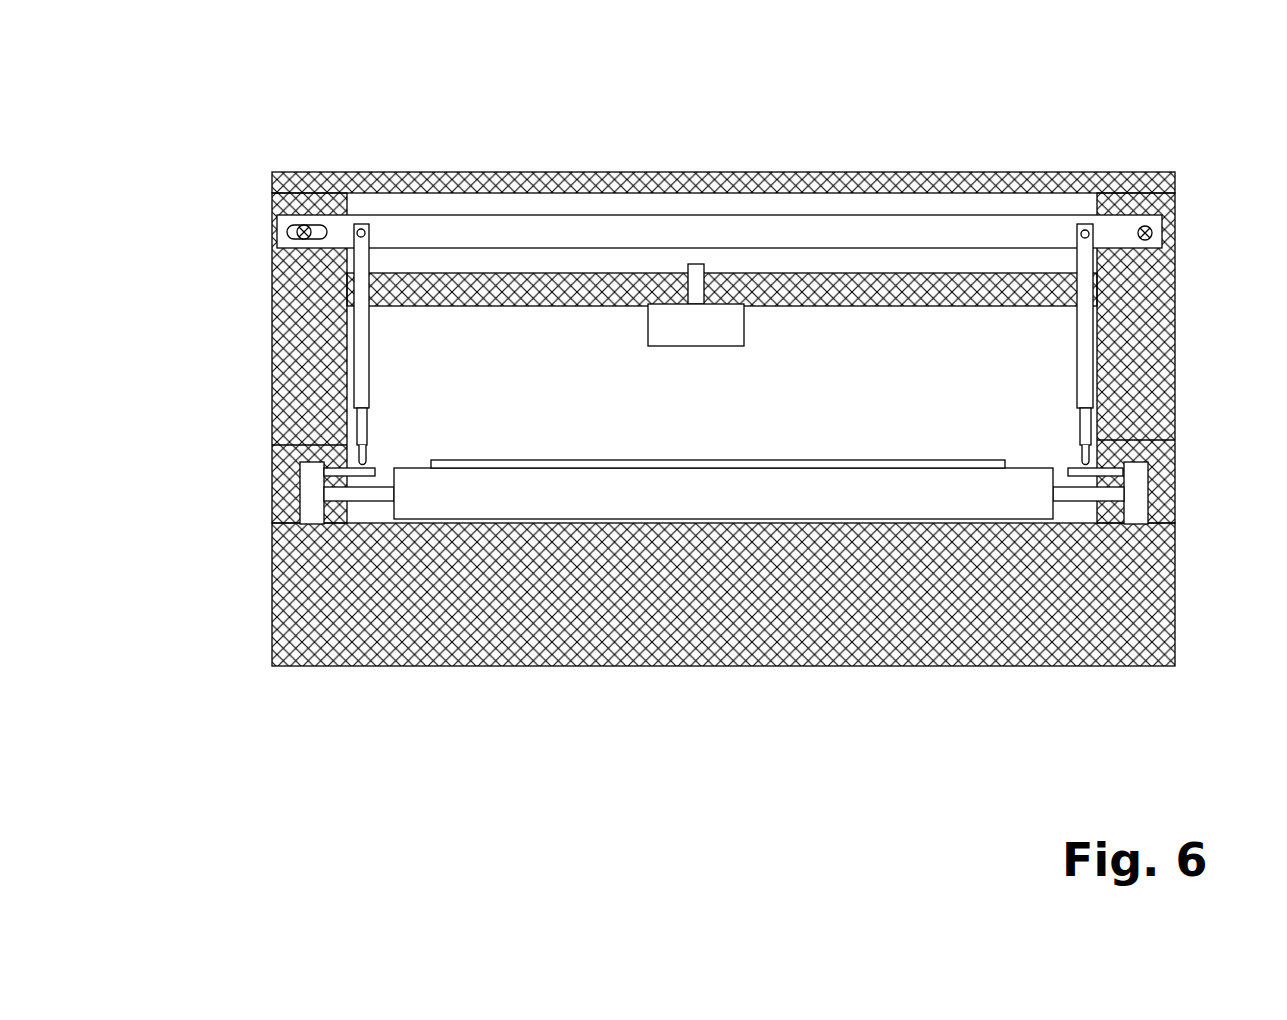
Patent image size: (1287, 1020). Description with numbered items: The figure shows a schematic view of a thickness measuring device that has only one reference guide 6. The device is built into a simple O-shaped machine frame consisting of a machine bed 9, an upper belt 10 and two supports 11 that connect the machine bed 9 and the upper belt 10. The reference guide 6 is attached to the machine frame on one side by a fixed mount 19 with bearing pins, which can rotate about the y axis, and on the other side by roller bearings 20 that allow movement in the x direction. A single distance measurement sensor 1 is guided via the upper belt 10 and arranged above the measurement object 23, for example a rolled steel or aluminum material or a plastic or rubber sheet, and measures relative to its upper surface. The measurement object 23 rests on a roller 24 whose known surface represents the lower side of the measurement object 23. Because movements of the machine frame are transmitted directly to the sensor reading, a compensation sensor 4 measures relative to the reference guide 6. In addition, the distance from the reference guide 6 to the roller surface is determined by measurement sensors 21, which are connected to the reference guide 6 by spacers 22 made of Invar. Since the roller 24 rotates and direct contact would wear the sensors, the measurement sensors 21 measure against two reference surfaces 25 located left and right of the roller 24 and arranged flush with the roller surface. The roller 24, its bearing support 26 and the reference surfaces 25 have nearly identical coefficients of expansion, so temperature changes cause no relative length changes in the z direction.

The distance measurement sensor 1 is at (672, 318).
The compensation sensor 4 is at (696, 263).
The reference guide 6 is at (1053, 214).
The machine bed 9 is at (1048, 617).
The upper belt 10 is at (866, 283).
The support 11 is at (292, 377).
The fixed mount 19 is at (1152, 225).
The roller bearing 20 is at (287, 223).
The measurement sensor 21 is at (352, 443).
The spacer 22 is at (355, 309).
The measurement object 23 is at (525, 465).
The roller 24 is at (633, 497).
The reference surface 25 is at (333, 479).
The bearing support 26 is at (300, 525).